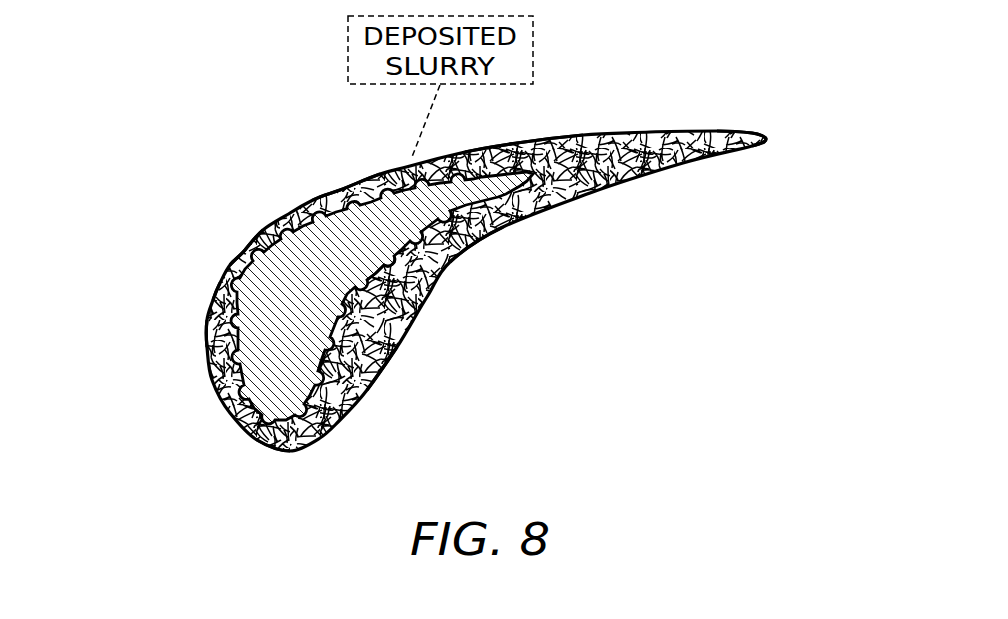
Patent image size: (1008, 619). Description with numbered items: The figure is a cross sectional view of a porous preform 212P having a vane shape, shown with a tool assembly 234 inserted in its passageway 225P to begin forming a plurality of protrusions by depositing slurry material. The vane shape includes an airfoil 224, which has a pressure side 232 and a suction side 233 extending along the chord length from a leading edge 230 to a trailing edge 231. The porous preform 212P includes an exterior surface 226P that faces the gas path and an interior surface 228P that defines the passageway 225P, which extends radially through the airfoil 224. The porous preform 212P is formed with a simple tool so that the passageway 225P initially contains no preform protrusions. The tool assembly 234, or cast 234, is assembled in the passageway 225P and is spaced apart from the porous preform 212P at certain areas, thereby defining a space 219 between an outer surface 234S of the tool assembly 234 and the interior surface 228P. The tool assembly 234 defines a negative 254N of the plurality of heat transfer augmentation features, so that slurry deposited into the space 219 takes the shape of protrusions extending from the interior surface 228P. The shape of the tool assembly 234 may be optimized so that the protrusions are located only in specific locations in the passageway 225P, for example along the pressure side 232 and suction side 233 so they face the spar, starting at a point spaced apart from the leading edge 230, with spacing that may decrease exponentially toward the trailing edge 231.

The porous preform 212P is at (158, 164).
The airfoil 224 is at (284, 182).
The exterior surface 226P is at (347, 180).
The passageway 225P is at (255, 248).
The negative of the plurality of heat transfer augmentation features 254N is at (220, 292).
The interior surface 228P is at (213, 347).
The tool assembly 234 is at (330, 309).
The outer surface of the tool assembly 234S is at (407, 294).
The space 219 is at (380, 327).
The pressure side 232 is at (483, 259).
The suction side 233 is at (543, 127).
The trailing edge 231 is at (787, 143).
The leading edge 230 is at (275, 466).